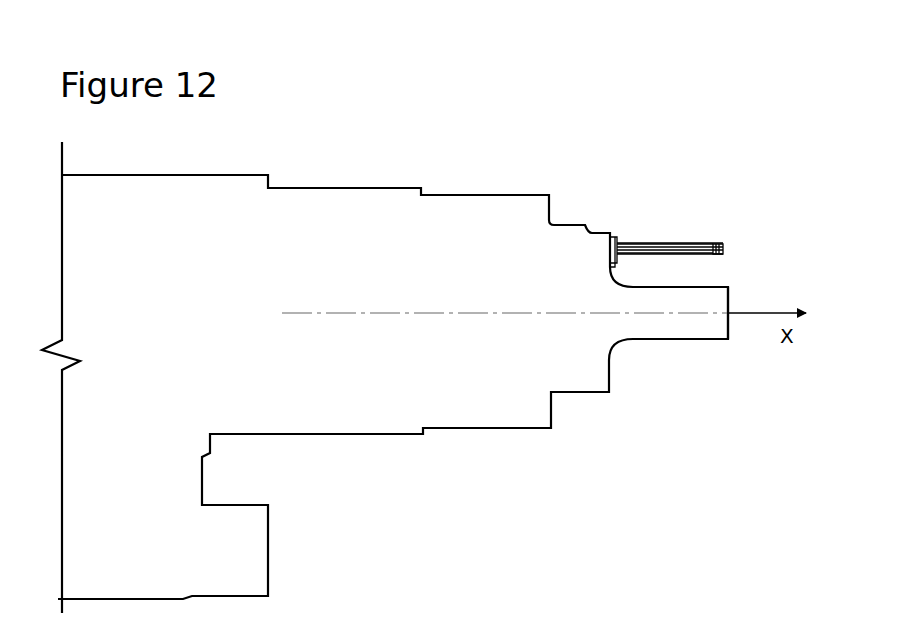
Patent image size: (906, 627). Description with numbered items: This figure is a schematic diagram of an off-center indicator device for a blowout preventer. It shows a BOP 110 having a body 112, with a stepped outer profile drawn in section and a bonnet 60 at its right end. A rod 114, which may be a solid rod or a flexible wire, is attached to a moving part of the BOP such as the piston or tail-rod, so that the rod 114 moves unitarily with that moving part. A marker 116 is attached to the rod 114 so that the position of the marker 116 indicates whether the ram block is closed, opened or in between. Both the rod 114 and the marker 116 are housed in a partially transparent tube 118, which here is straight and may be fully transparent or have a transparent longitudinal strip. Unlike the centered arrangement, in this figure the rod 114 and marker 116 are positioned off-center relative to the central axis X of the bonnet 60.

The BOP 110 is at (340, 160).
The body 112 is at (298, 270).
The rod 114 is at (657, 245).
The marker 116 is at (729, 261).
The partially transparent tube 118 is at (690, 243).
The bonnet 60 is at (696, 339).